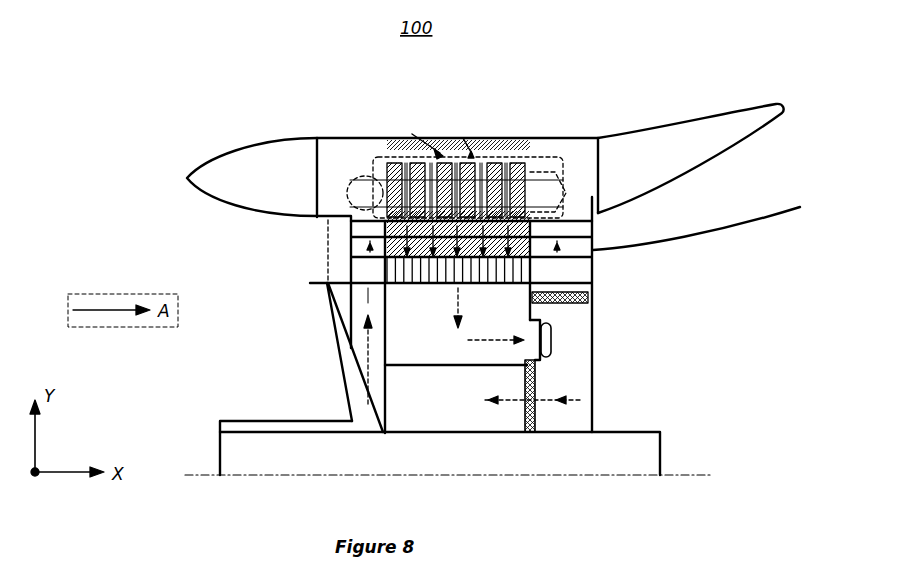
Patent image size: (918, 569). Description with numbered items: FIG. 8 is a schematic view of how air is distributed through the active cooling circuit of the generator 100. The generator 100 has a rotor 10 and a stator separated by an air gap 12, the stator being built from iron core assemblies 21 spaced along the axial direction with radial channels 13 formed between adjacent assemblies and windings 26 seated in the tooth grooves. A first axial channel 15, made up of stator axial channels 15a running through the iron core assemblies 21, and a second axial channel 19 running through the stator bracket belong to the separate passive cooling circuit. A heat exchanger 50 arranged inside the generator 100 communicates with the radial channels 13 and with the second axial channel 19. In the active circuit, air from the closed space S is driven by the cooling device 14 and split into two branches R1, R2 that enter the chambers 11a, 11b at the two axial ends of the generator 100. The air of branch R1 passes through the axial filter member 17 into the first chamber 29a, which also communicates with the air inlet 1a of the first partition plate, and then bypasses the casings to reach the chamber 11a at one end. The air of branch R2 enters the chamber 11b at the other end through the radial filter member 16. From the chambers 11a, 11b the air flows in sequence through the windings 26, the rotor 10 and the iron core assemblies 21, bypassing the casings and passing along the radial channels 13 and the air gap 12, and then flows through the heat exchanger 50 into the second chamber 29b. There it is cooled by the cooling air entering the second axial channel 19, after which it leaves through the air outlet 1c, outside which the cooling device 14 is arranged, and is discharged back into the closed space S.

The generator 100 is at (492, 279).
The rotor 10 is at (367, 136).
The chamber 11a is at (317, 195).
The chamber 11b is at (603, 178).
The air gap 12 is at (463, 138).
The iron core assembly 21 is at (375, 160).
The winding 26 is at (360, 233).
The first axial channel 15 is at (370, 262).
The stator axial channel 15a is at (342, 277).
The radial channel 13 is at (447, 262).
The heat exchanger 50 is at (470, 283).
The second axial channel 19 is at (580, 270).
The radial filter member 16 is at (578, 303).
The cooling device 14 is at (556, 352).
The axial filter member 17 is at (538, 428).
The closed space S is at (594, 417).
The branch R1 is at (412, 132).
The branch R2 is at (535, 158).
The air outlet 1c is at (505, 364).
The air inlet 1a is at (377, 407).
The first chamber 29a is at (457, 418).
The second chamber 29b is at (383, 340).